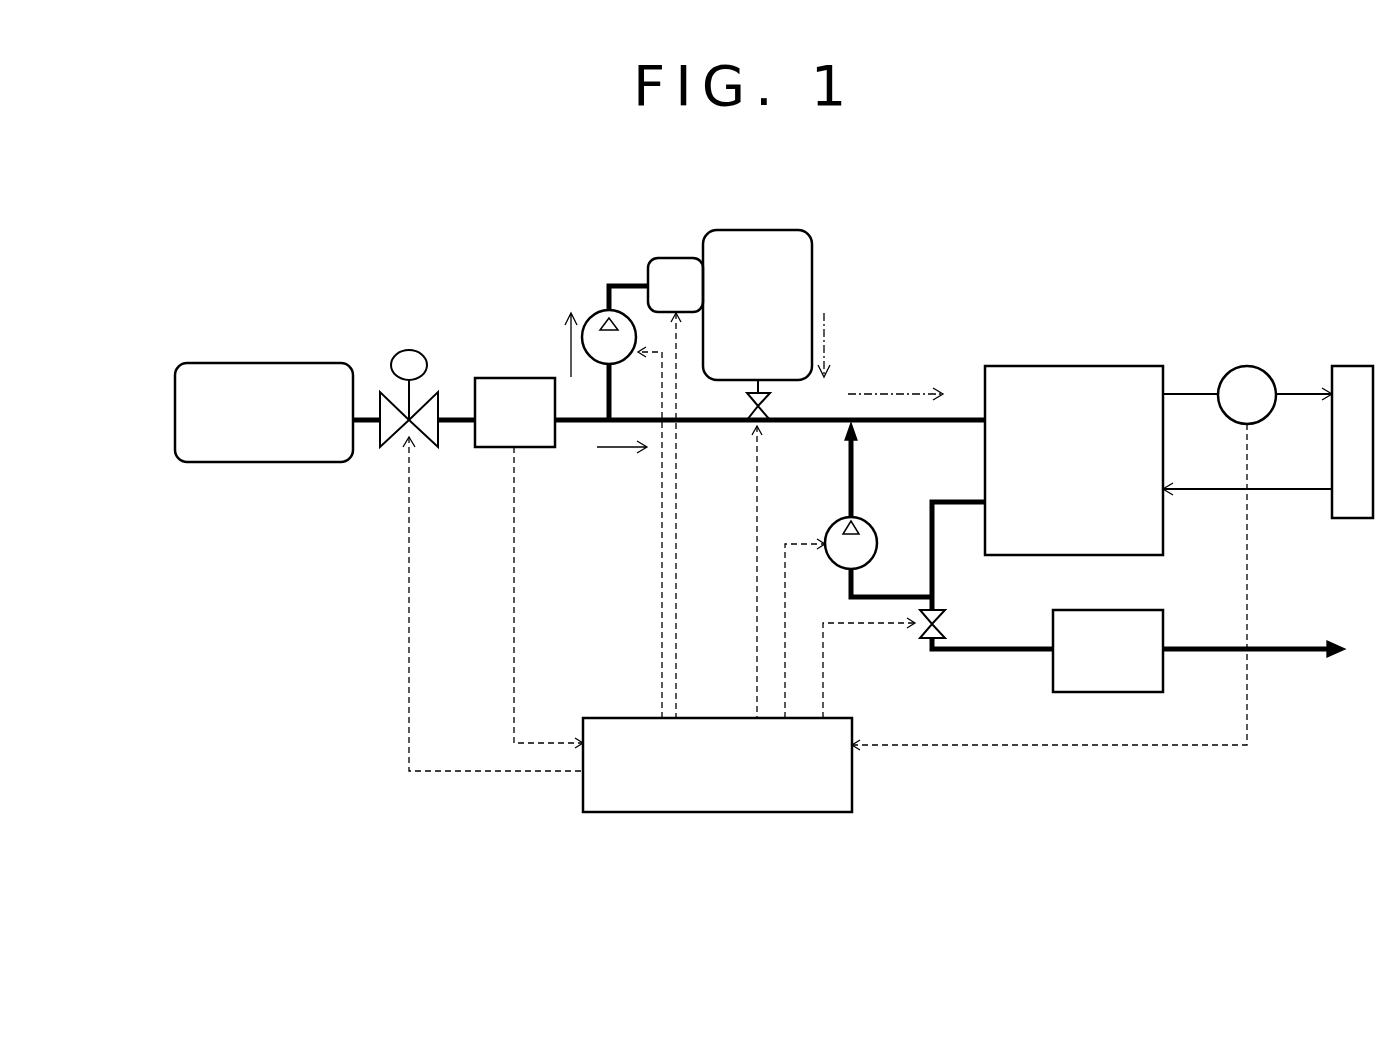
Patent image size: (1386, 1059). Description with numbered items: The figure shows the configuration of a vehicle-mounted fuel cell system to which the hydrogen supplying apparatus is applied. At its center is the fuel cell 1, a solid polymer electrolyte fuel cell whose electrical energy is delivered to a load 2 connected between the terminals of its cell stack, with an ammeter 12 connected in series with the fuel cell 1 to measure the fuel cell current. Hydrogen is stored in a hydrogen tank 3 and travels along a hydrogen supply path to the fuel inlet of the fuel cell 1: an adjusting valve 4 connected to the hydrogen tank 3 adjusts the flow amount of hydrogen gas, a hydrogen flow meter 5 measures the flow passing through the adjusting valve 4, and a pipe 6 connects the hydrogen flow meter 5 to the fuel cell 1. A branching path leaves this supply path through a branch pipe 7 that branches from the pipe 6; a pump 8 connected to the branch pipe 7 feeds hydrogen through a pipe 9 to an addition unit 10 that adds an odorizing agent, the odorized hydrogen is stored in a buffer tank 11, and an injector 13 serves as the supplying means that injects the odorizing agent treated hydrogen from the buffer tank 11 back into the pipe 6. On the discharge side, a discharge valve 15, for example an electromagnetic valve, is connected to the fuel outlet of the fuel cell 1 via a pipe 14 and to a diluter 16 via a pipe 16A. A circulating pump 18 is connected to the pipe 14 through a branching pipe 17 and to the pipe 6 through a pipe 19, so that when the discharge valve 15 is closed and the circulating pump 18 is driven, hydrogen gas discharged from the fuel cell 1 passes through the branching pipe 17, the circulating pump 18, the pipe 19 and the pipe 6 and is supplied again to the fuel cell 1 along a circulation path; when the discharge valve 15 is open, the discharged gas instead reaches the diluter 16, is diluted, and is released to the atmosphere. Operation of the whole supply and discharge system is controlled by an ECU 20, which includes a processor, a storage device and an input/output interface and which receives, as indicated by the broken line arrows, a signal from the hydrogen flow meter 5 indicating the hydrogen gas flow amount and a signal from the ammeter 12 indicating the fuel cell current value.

The fuel cell 1 is at (1072, 366).
The load 2 is at (1352, 366).
The hydrogen tank 3 is at (265, 363).
The adjusting valve 4 is at (407, 351).
The hydrogen flow meter 5 is at (488, 378).
The pipe 6 is at (732, 423).
The branch pipe 7 is at (609, 392).
The pump 8 is at (598, 315).
The pipe 9 is at (612, 285).
The addition unit 10 is at (662, 258).
The buffer tank 11 is at (788, 230).
The ammeter 12 is at (1245, 367).
The injector 13 is at (766, 401).
The pipe 14 is at (945, 502).
The discharge valve 15 is at (942, 610).
The diluter 16 is at (1152, 610).
The pipe 16A is at (987, 648).
The branching pipe 17 is at (883, 597).
The circulating pump 18 is at (838, 519).
The pipe 19 is at (853, 470).
The ECU 20 is at (596, 812).